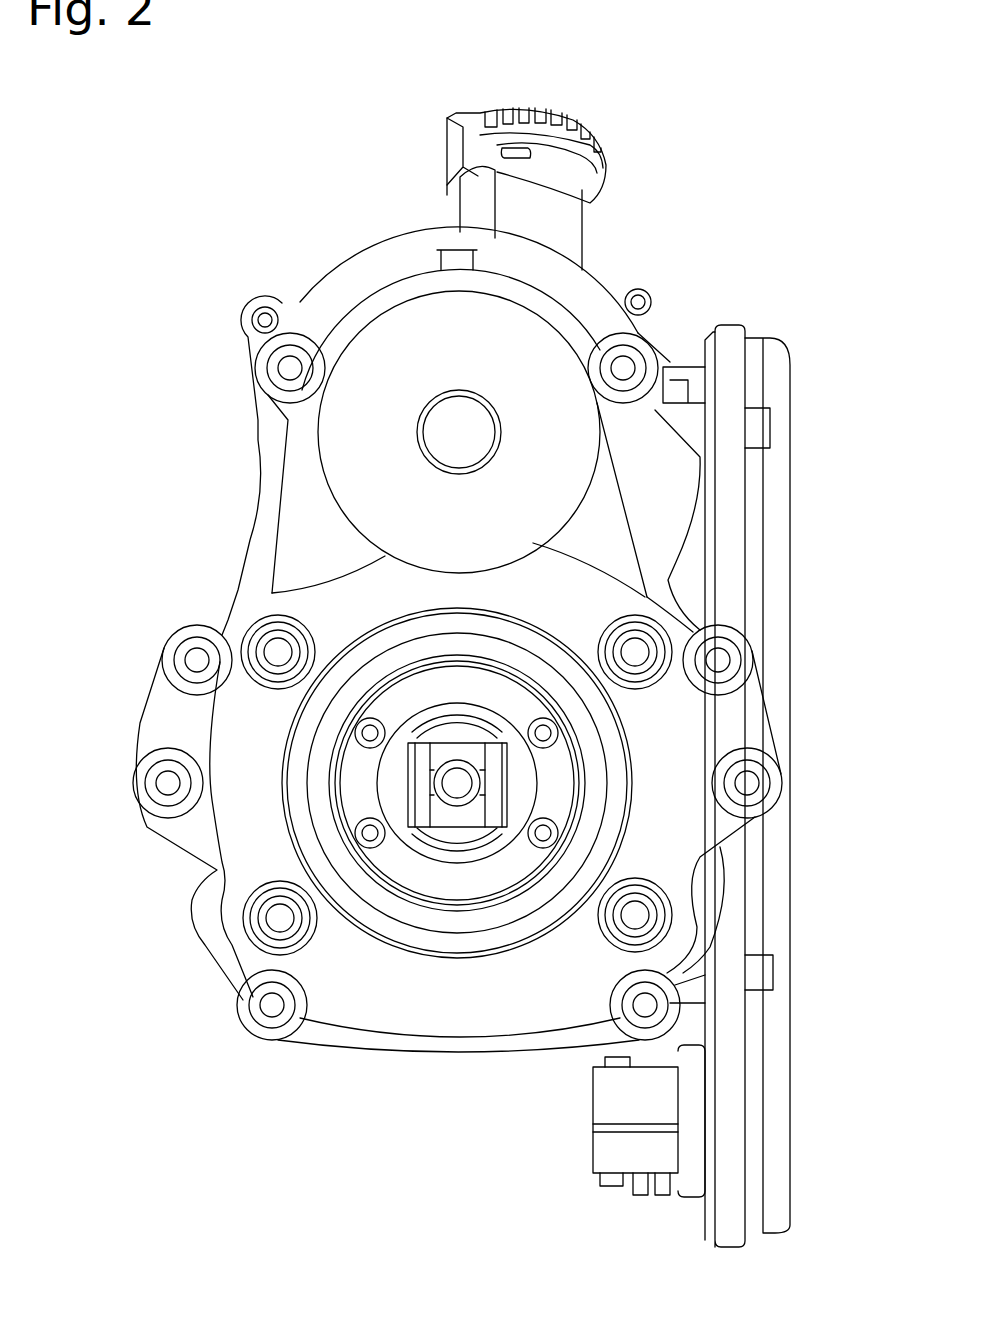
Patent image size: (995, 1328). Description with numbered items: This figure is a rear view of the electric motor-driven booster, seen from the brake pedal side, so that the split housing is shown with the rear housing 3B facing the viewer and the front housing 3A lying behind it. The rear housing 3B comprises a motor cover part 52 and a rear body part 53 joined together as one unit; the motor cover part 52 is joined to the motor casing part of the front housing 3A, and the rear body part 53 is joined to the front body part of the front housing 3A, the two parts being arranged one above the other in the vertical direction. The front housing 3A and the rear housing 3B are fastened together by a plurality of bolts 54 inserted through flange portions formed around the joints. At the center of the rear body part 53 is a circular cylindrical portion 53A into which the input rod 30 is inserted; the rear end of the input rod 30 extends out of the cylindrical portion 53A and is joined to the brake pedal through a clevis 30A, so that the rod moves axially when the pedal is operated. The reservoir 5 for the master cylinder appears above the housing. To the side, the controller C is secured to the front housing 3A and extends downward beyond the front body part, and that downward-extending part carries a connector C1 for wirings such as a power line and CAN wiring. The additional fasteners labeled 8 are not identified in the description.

The front housing 3A is at (335, 288).
The rear housing 3B is at (190, 902).
The reservoir 5 is at (585, 245).
The bolt 8 is at (265, 645).
The input rod 30 is at (460, 795).
The clevis 30A is at (470, 820).
The motor cover part 52 is at (393, 312).
The rear body part 53 is at (428, 938).
The circular cylindrical portion 53A is at (385, 897).
The bolts 54 is at (650, 350).
The controller C is at (782, 1090).
The connector C1 is at (636, 1153).